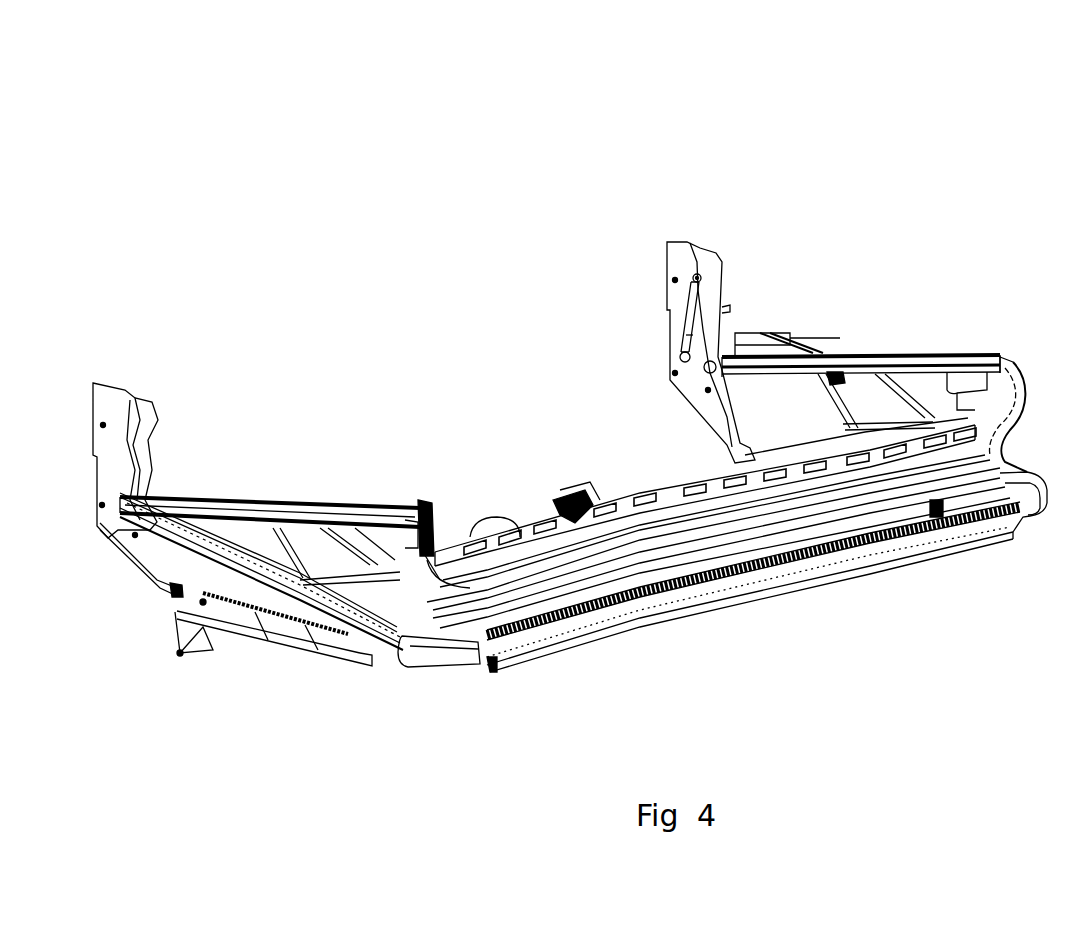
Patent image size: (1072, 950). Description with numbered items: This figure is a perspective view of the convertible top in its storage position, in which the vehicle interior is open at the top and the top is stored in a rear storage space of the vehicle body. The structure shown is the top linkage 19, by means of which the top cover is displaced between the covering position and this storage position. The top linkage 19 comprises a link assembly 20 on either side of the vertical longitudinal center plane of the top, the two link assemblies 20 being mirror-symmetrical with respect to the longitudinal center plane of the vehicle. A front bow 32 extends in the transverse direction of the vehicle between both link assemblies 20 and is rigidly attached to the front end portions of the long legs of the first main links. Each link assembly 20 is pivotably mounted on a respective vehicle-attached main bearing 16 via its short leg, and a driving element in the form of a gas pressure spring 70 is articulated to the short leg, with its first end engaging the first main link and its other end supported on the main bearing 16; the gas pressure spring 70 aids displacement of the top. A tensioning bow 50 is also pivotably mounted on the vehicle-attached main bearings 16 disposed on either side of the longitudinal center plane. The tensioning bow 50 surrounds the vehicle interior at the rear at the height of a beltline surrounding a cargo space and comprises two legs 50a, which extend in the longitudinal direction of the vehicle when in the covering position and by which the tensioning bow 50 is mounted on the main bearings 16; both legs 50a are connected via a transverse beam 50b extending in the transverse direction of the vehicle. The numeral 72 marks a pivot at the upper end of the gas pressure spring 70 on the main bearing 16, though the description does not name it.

The top linkage 19 is at (867, 133).
The vehicle-attached main bearing 16 is at (108, 414).
The pivot joint 72 is at (690, 276).
The gas pressure spring 70 is at (688, 307).
The link assembly 20 is at (260, 494).
The front bow 32 is at (655, 492).
The tensioning bow 50 is at (666, 600).
The leg 50a is at (366, 643).
The transverse beam 50b is at (768, 572).